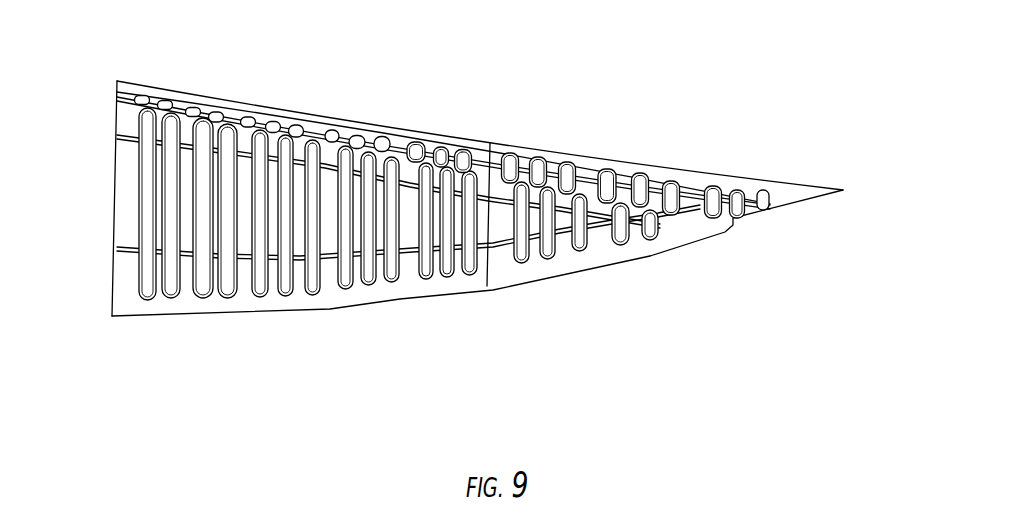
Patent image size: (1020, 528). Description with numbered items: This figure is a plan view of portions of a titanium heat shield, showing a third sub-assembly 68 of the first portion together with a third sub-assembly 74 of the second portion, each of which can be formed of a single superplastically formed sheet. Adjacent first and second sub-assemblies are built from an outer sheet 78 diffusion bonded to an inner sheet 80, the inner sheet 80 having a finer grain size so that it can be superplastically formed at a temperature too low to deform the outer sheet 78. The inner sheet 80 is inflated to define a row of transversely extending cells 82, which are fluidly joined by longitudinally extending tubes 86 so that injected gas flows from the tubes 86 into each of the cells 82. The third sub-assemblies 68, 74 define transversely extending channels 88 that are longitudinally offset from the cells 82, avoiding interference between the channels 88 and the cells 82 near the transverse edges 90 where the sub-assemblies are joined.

The third sub-assembly 68 is at (113, 203).
The third sub-assembly 74 is at (665, 238).
The outer sheet 78 is at (143, 90).
The inner sheet 80 is at (370, 133).
The cells 82 is at (420, 169).
The tubes 86 is at (580, 164).
The channels 88 is at (318, 204).
The transverse edges 90 is at (168, 90).